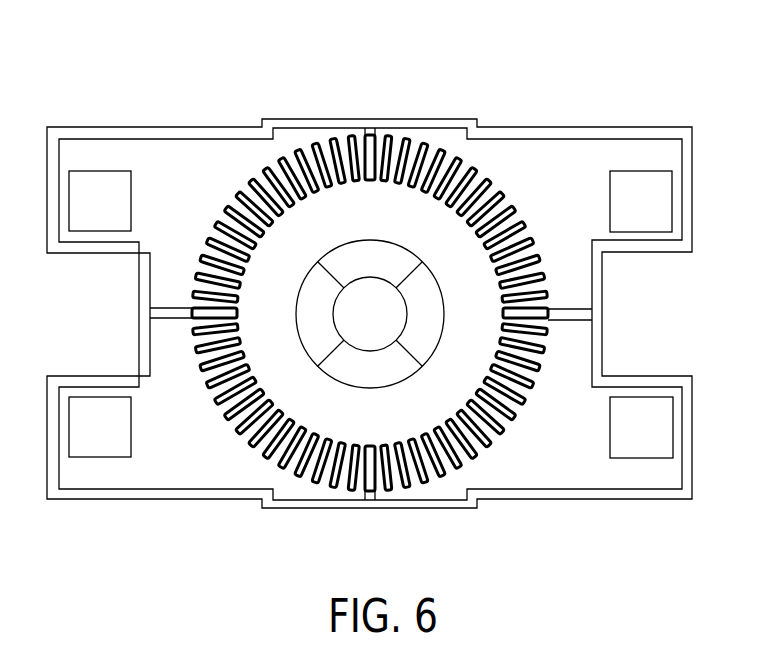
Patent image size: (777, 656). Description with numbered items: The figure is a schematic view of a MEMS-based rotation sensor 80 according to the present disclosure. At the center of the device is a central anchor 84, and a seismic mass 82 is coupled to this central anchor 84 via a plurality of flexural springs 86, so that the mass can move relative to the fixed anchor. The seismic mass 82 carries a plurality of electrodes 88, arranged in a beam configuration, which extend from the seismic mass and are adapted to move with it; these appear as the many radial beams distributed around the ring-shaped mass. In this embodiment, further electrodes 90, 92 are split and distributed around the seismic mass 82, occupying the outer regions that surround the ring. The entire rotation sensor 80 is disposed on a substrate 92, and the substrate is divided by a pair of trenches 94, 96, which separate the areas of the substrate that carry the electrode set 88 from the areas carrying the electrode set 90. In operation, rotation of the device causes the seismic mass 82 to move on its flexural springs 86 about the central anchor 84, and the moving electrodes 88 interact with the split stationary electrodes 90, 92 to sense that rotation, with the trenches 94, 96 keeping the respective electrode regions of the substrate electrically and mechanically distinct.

The MEMS-based rotation sensor 80 is at (126, 91).
The seismic mass 82 is at (454, 236).
The central anchor 84 is at (406, 322).
The flexural springs 86 is at (326, 268).
The electrodes 88 is at (521, 214).
The electrodes 90 is at (567, 157).
The substrate 92 is at (180, 160).
The trench 94 is at (161, 307).
The trench 96 is at (375, 495).